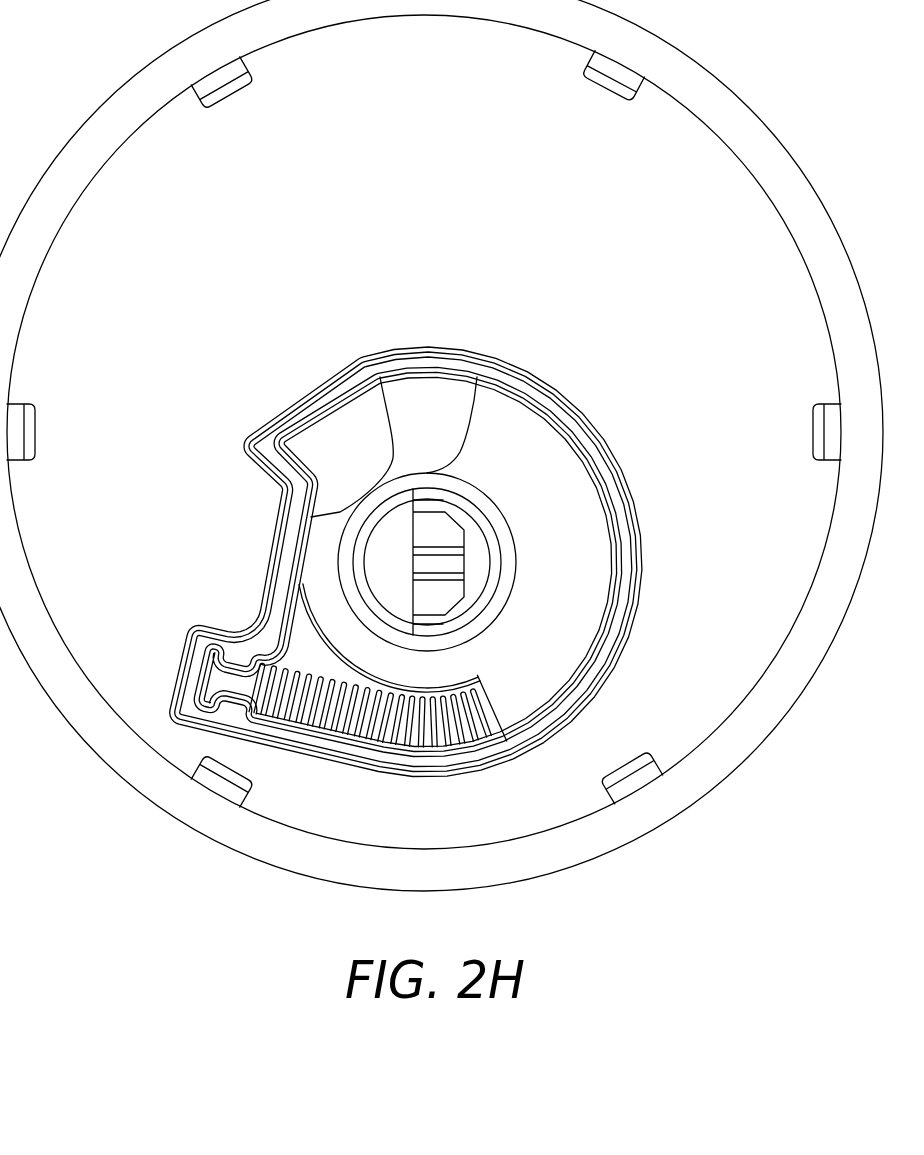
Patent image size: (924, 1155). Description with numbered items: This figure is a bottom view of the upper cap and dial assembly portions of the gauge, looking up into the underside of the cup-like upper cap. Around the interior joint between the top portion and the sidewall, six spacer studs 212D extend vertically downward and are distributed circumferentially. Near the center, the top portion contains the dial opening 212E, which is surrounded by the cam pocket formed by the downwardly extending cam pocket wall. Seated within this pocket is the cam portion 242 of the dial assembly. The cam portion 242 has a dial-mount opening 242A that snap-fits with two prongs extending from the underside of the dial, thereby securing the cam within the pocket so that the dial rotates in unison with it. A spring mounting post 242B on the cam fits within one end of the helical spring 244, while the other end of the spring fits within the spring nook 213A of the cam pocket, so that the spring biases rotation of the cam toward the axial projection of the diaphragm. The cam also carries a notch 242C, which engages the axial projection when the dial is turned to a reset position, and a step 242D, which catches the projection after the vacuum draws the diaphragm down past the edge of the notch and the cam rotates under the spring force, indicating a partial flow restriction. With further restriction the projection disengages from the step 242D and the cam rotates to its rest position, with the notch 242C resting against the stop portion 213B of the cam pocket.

The spacer studs 212D is at (812, 432).
The dial opening 212E is at (646, 517).
The spring nook 213A is at (218, 686).
The stop portion 213B is at (268, 473).
The cam portion 242 is at (597, 684).
The dial-mount opening 242A is at (446, 560).
The spring mounting post 242B is at (483, 712).
The notch 242C is at (327, 420).
The step 242D is at (437, 392).
The helical spring 244 is at (369, 722).